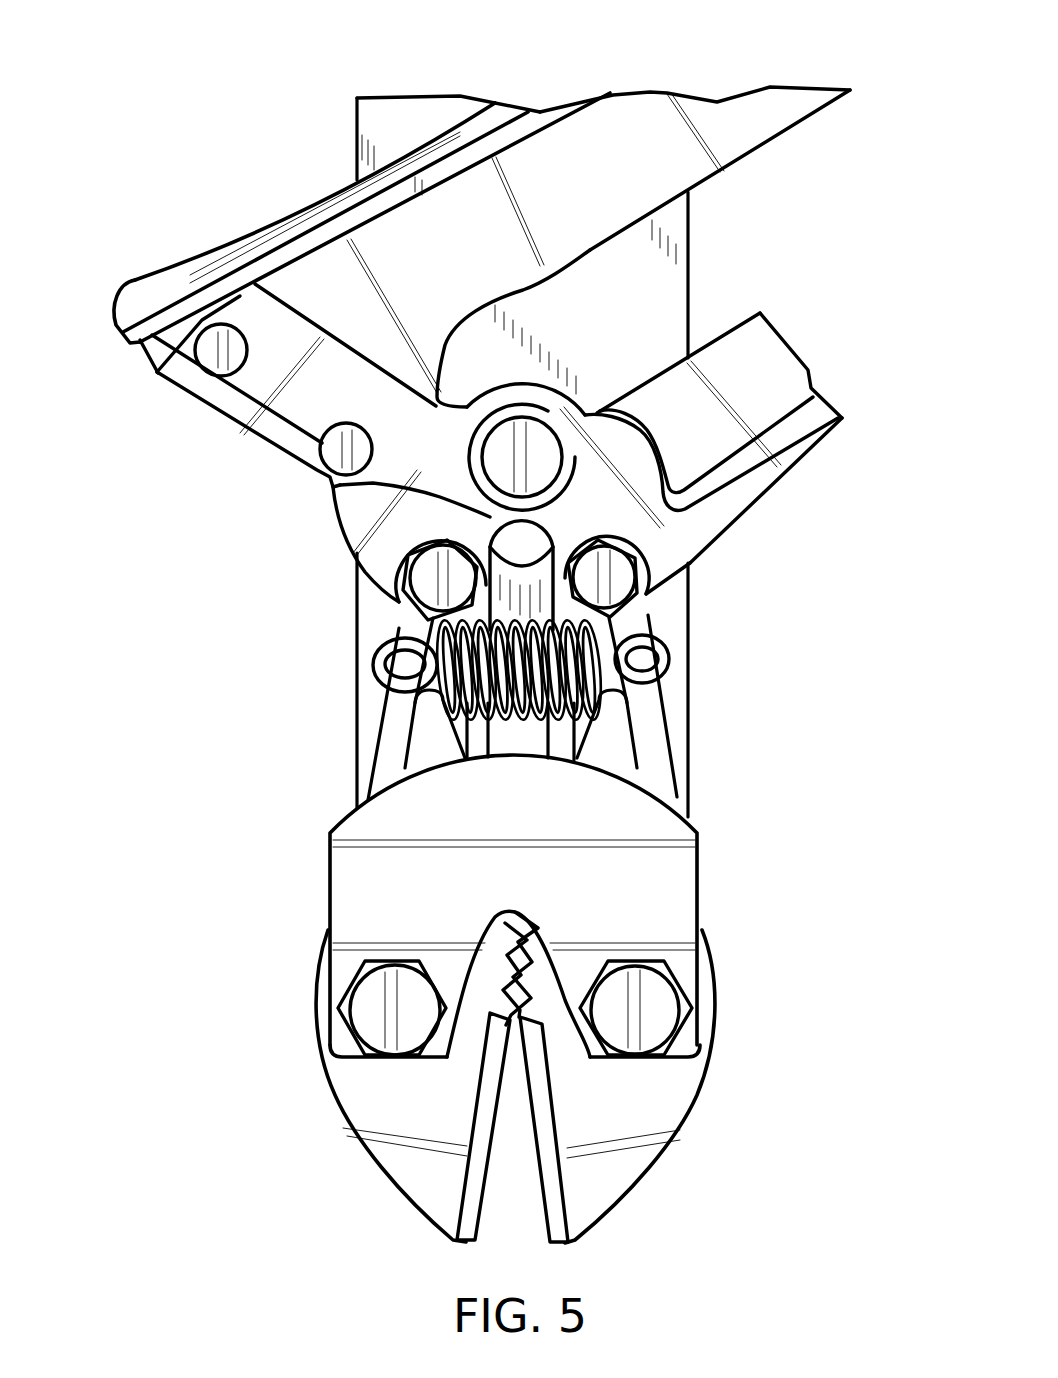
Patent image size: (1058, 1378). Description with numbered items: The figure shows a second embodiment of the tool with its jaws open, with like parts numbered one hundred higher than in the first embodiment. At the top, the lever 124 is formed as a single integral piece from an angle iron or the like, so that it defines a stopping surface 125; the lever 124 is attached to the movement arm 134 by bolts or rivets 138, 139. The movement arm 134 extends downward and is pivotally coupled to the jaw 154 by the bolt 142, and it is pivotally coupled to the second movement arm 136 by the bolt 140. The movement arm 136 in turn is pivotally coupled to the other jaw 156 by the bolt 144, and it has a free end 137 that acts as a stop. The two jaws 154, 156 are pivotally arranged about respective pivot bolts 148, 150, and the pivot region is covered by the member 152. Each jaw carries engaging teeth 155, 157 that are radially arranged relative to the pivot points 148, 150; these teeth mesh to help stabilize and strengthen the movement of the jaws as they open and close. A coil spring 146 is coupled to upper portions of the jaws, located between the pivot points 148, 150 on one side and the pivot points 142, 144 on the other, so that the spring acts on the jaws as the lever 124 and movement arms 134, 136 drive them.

The lever 124 is at (300, 215).
The stopping surface 125 is at (668, 112).
The movement arm 134 is at (357, 545).
The movement arm 136 is at (790, 457).
The free end 137 is at (807, 373).
The bolt or rivet 138 is at (208, 365).
The bolt or rivet 139 is at (330, 462).
The bolt 140 is at (547, 442).
The bolt 142 is at (430, 593).
The bolt 144 is at (627, 583).
The coil spring 146 is at (650, 692).
The pivot bolt 148 is at (363, 1003).
The pivot bolt 150 is at (667, 1007).
The member 152 is at (657, 873).
The jaw 154 is at (393, 1193).
The engaging teeth 155 is at (515, 985).
The jaw 156 is at (607, 1203).
The engaging teeth 157 is at (533, 1010).